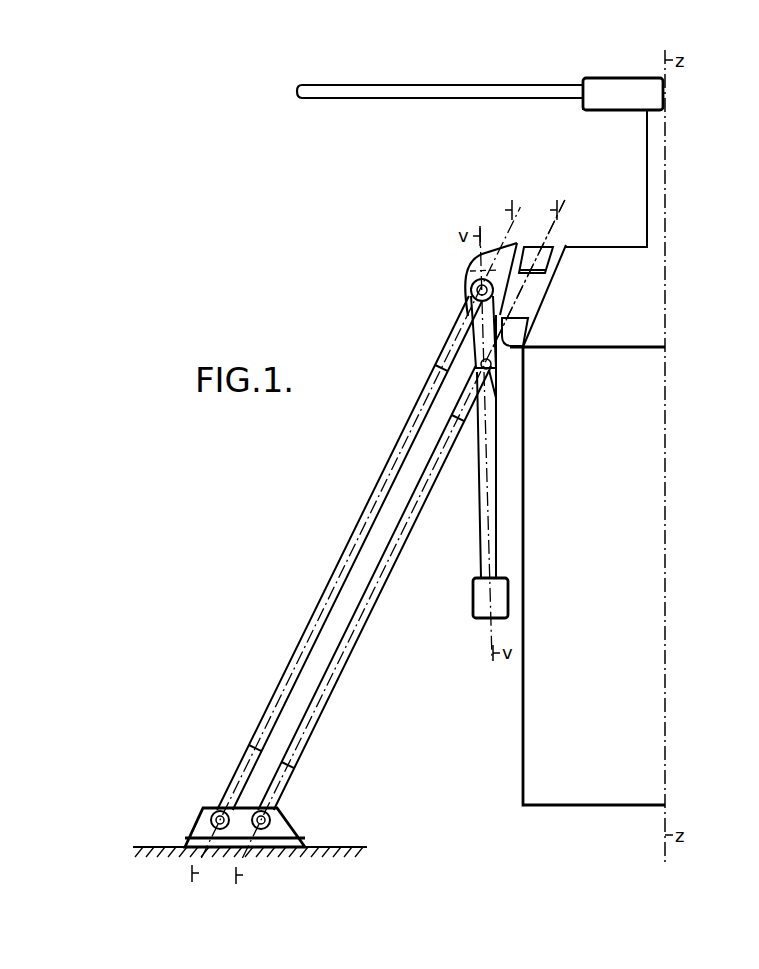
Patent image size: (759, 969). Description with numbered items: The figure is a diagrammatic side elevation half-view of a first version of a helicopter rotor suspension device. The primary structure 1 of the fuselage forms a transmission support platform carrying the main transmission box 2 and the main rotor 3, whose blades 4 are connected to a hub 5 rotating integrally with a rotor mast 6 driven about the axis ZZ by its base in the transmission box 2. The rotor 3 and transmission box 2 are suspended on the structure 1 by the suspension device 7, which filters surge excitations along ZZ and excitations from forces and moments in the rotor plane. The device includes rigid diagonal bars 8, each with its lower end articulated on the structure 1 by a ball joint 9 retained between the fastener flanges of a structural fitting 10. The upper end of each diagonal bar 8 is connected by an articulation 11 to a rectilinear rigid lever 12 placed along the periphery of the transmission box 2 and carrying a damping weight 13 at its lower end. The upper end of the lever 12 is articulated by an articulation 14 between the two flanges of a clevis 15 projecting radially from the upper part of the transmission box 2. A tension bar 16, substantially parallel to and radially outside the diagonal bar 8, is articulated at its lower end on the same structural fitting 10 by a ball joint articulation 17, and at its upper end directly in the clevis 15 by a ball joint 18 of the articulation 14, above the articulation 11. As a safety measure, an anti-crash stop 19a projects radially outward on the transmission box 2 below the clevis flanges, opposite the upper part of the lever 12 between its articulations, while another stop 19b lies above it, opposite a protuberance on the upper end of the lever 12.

The primary structure 1 is at (137, 847).
The main transmission box 2 is at (583, 783).
The main rotor 3 is at (578, 78).
The blades 4 is at (483, 92).
The hub 5 is at (628, 93).
The rotor mast 6 is at (655, 165).
The suspension device 7 is at (378, 544).
The diagonal bar 8 is at (330, 683).
The ball joint 9 is at (270, 818).
The structural fitting 10 is at (205, 827).
The articulation 11 is at (470, 353).
The lever 12 is at (480, 530).
The damping weight 13 is at (487, 618).
The articulation 14 is at (462, 272).
The clevis 15 is at (527, 292).
The tension bar 16 is at (318, 593).
The ball joint articulation 17 is at (215, 811).
The ball joint 18 is at (470, 290).
The anti-crash stop 19a is at (497, 330).
The stop 19b is at (530, 255).